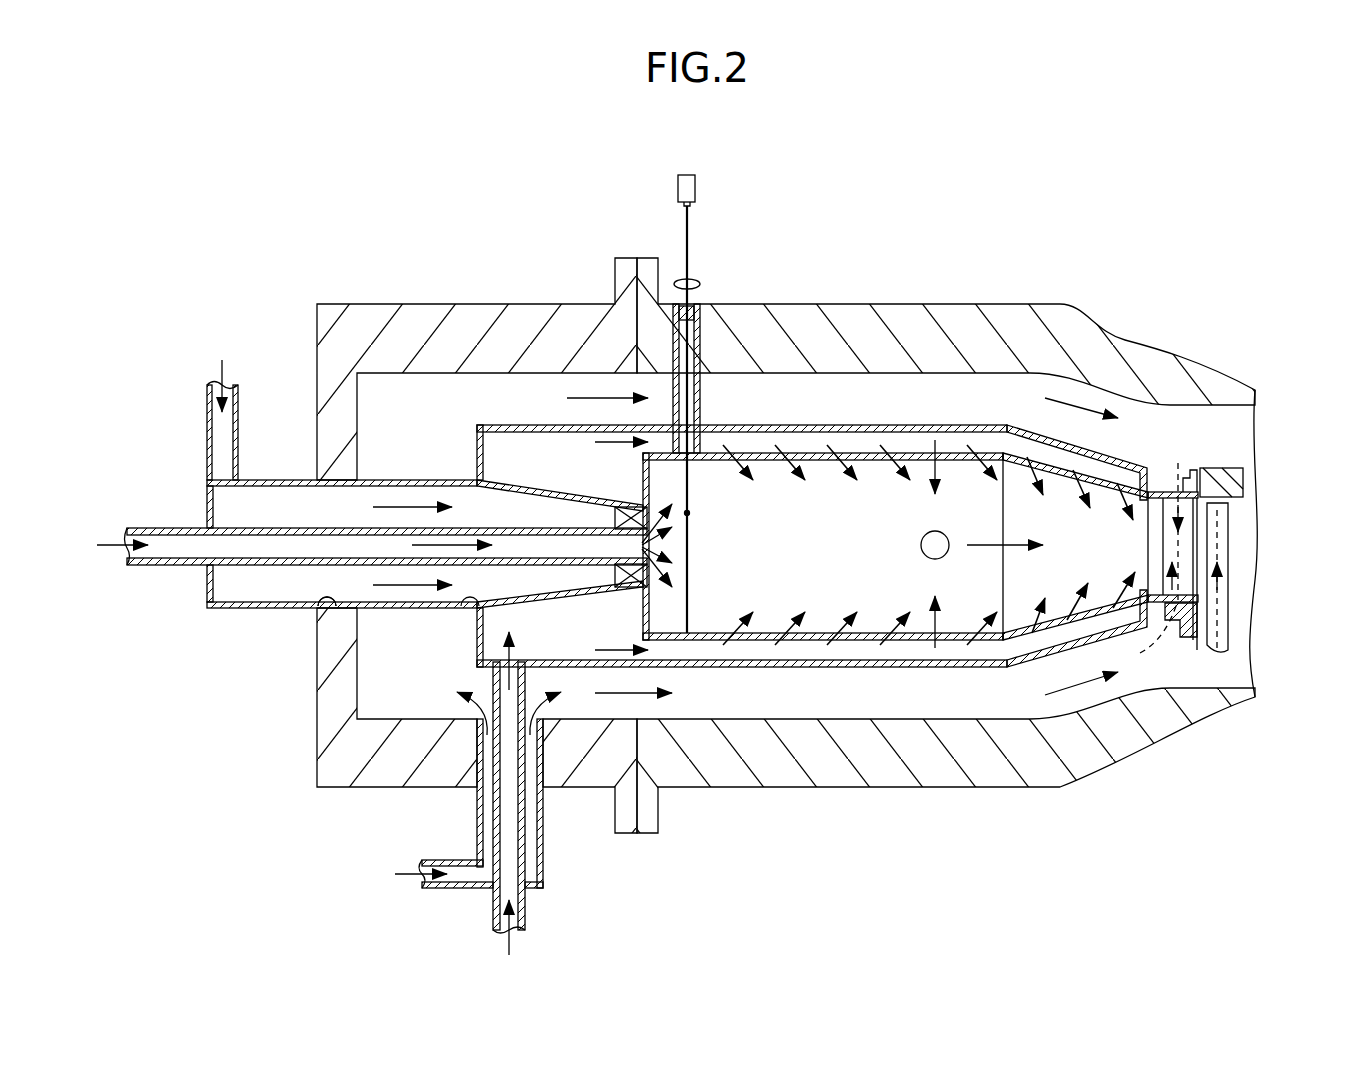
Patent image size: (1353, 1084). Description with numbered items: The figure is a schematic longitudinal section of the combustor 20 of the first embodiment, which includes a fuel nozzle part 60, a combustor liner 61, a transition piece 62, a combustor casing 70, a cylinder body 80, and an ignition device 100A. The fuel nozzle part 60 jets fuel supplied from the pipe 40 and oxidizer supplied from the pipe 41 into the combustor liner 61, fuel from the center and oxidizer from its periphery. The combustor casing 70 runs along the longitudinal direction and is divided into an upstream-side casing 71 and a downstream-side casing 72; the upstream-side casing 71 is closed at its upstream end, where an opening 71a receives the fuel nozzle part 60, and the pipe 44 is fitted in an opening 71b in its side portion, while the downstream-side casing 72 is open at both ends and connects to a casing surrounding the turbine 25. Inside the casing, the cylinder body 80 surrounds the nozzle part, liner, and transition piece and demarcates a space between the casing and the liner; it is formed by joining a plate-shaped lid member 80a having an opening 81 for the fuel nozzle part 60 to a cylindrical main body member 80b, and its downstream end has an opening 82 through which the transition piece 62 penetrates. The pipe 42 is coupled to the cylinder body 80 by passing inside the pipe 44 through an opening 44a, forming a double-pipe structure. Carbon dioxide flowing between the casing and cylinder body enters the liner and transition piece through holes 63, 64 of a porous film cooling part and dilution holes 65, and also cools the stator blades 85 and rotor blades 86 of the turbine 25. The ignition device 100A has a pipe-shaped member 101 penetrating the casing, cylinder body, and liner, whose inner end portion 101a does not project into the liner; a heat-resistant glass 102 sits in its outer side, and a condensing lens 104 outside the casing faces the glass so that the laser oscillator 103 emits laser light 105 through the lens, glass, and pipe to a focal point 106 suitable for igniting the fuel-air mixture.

The combustor 20 is at (937, 190).
The turbine 25 is at (1206, 463).
The pipe 40 is at (166, 566).
The pipe 41 is at (207, 432).
The pipe 42 is at (494, 912).
The pipe 44 is at (477, 828).
The opening 44a is at (524, 912).
The fuel nozzle part 60 is at (881, 633).
The combustor liner 61 is at (880, 642).
The transition piece 62 is at (1115, 598).
The holes 63 is at (790, 642).
The holes 64 is at (1033, 640).
The dilution holes 65 is at (920, 545).
The combustor casing 70 is at (615, 229).
The upstream-side casing 71 is at (425, 312).
The opening 71a is at (320, 612).
The opening 71b is at (543, 852).
The downstream-side casing 72 is at (845, 303).
The cylinder body 80 is at (778, 608).
The lid member 80a is at (478, 449).
The main body member 80b is at (523, 425).
The opening 81 is at (466, 612).
The opening 82 is at (1131, 608).
The stator blades 85 is at (1187, 533).
The rotor blades 86 is at (1222, 558).
The ignition device 100A is at (727, 387).
The pipe-shaped member 101 is at (701, 304).
The inner end portion 101a is at (692, 460).
The heat-resistant glass 102 is at (697, 295).
The laser oscillator 103 is at (689, 176).
The condensing lens 104 is at (680, 282).
The laser light 105 is at (689, 232).
The focal point 106 is at (690, 516).